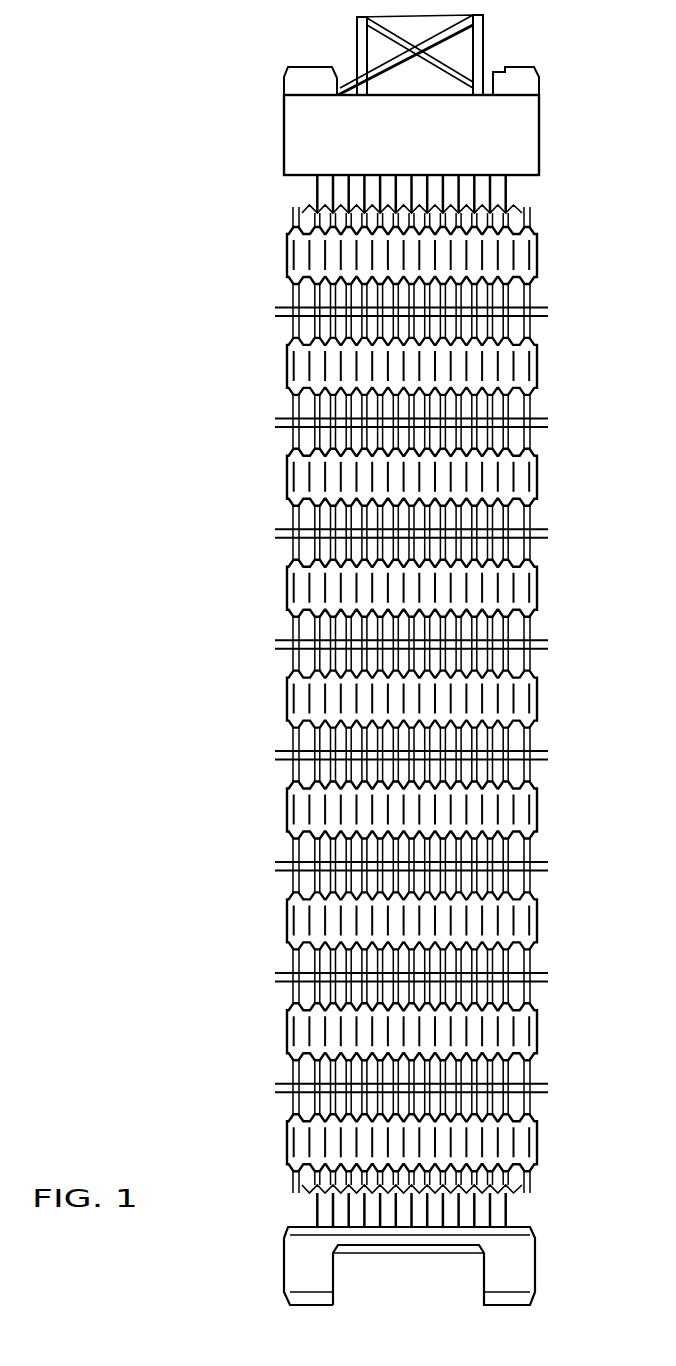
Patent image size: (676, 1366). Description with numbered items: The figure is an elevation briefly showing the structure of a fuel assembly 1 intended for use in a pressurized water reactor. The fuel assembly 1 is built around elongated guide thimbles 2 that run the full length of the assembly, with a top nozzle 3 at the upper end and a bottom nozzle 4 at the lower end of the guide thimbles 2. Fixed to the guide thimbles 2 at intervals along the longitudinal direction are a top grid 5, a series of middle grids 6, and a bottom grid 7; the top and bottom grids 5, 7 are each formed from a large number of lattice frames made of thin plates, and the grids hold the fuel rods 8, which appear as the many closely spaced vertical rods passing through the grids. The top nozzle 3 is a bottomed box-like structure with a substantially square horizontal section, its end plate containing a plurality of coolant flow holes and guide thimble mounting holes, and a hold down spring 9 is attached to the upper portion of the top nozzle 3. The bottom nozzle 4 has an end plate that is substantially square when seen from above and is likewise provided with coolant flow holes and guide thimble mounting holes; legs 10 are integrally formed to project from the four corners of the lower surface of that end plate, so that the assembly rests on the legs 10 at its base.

The fuel assembly 1 is at (252, 558).
The guide thimbles 2 is at (501, 192).
The top nozzle 3 is at (540, 129).
The bottom nozzle 4 is at (536, 1262).
The top grid 5 is at (539, 260).
The middle grids 6 is at (539, 371).
The bottom grid 7 is at (538, 1140).
The fuel rods 8 is at (293, 443).
The hold down spring 9 is at (487, 40).
The legs 10 is at (294, 1268).